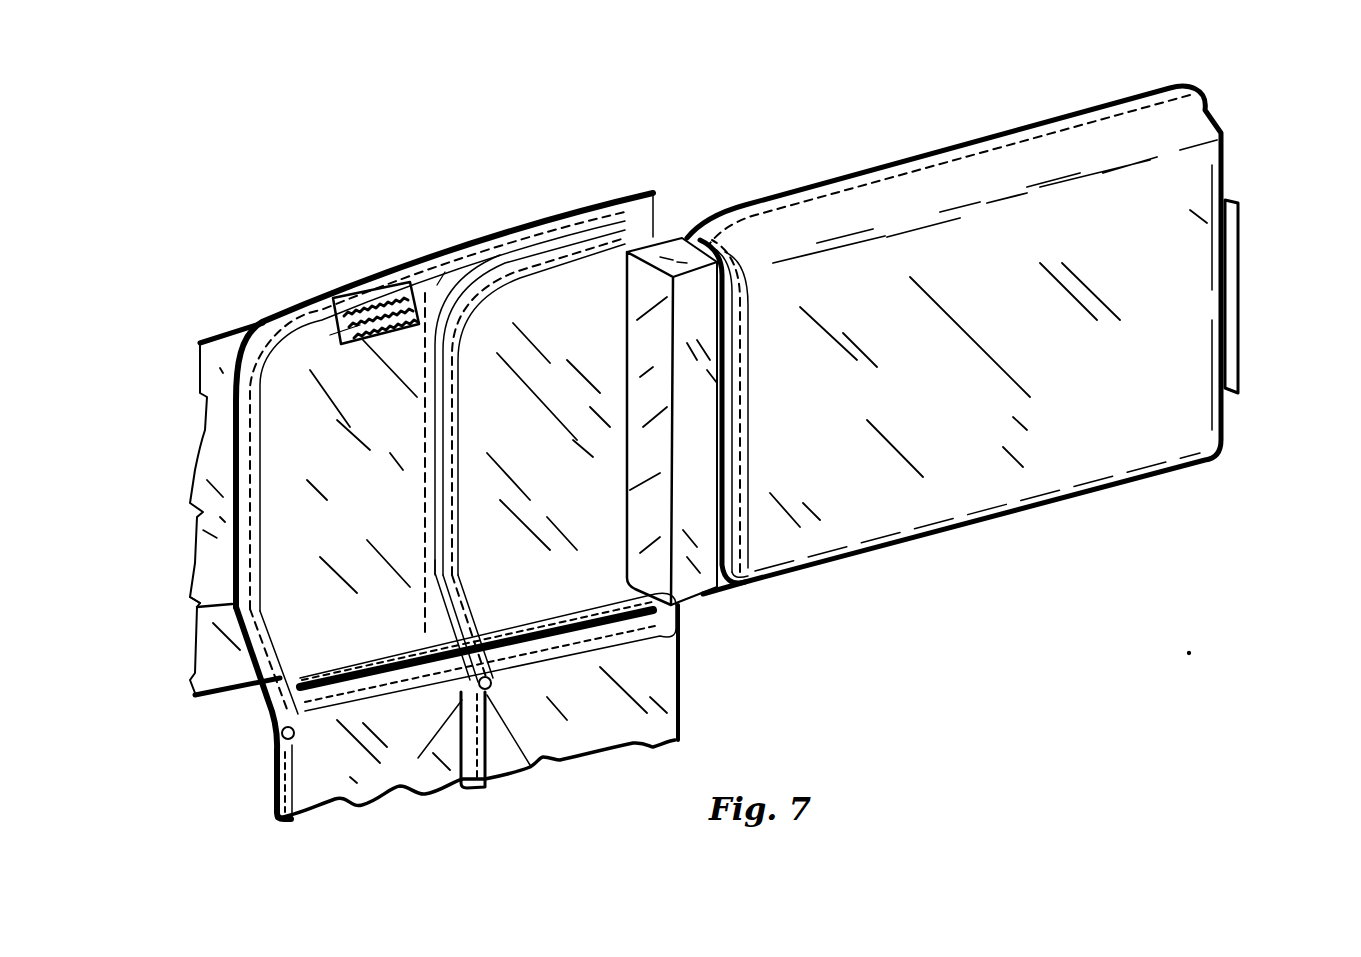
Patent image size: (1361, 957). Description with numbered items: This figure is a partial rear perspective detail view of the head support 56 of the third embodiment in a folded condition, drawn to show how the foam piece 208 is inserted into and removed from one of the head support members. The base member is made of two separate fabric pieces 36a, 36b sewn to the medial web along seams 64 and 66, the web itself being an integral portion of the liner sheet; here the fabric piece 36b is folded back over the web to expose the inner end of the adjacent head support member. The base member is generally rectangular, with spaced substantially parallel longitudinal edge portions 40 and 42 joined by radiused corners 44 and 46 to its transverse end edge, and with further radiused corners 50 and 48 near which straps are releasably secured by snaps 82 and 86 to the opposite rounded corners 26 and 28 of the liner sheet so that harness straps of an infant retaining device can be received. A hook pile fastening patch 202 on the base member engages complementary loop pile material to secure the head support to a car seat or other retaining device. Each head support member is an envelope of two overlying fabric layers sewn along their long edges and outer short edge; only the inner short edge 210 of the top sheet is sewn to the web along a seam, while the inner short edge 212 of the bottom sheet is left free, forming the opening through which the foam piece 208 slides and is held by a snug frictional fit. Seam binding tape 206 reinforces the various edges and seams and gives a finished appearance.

The rounded corner 26 is at (281, 710).
The rounded corner 28 is at (458, 694).
The fabric piece of base member 36a is at (205, 344).
The fabric piece of base member 36b is at (540, 290).
The longitudinal edge portion 40 is at (427, 490).
The longitudinal edge portion 42 is at (232, 447).
The radiused corner 44 is at (436, 285).
The radiused corner 46 is at (280, 405).
The radiused corner of base member 48 is at (433, 577).
The radiused corner of base member 50 is at (192, 607).
The head support 56 is at (514, 118).
The seam 64 is at (413, 292).
The seam 66 is at (663, 240).
The snap 82 is at (282, 740).
The snap 86 is at (545, 758).
The hook pile fastening patch 202 is at (345, 305).
The seam binding tape 206 is at (1020, 135).
The foam piece 208 is at (690, 582).
The inner short edge of top sheet 210 is at (680, 237).
The inner short edge of bottom sheet 212 is at (743, 580).